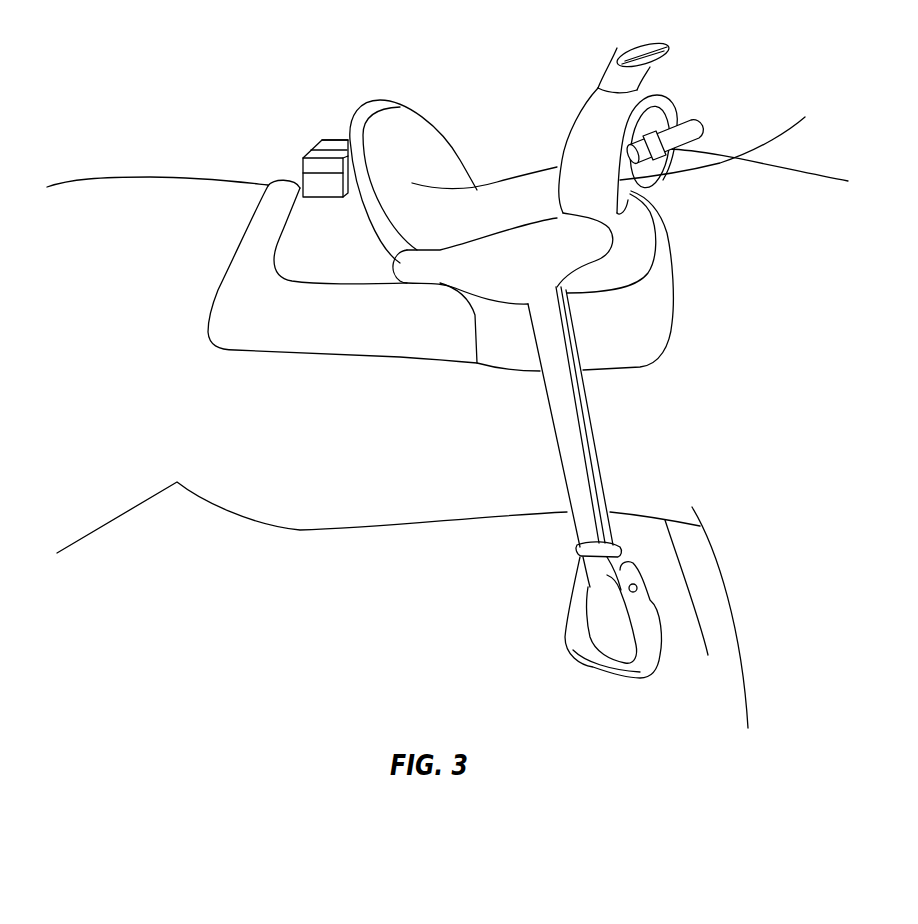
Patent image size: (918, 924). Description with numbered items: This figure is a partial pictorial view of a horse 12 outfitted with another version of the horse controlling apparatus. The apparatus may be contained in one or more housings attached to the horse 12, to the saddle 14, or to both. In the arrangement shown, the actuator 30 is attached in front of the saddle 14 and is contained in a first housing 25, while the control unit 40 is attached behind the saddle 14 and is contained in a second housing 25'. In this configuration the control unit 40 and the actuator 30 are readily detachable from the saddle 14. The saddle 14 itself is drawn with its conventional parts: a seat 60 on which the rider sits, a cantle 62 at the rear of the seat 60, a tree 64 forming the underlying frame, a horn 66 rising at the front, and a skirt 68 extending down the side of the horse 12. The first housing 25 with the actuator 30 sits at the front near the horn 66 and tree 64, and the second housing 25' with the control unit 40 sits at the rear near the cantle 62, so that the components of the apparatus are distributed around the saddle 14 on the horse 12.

The horse 12 is at (164, 192).
The saddle 14 is at (525, 121).
The first housing 25 is at (697, 110).
The second housing 25' is at (287, 123).
The actuator 30 is at (718, 117).
The control unit 40 is at (333, 117).
The seat 60 is at (497, 183).
The cantle 62 is at (387, 121).
The tree 64 is at (660, 100).
The horn 66 is at (649, 36).
The skirt 68 is at (368, 325).